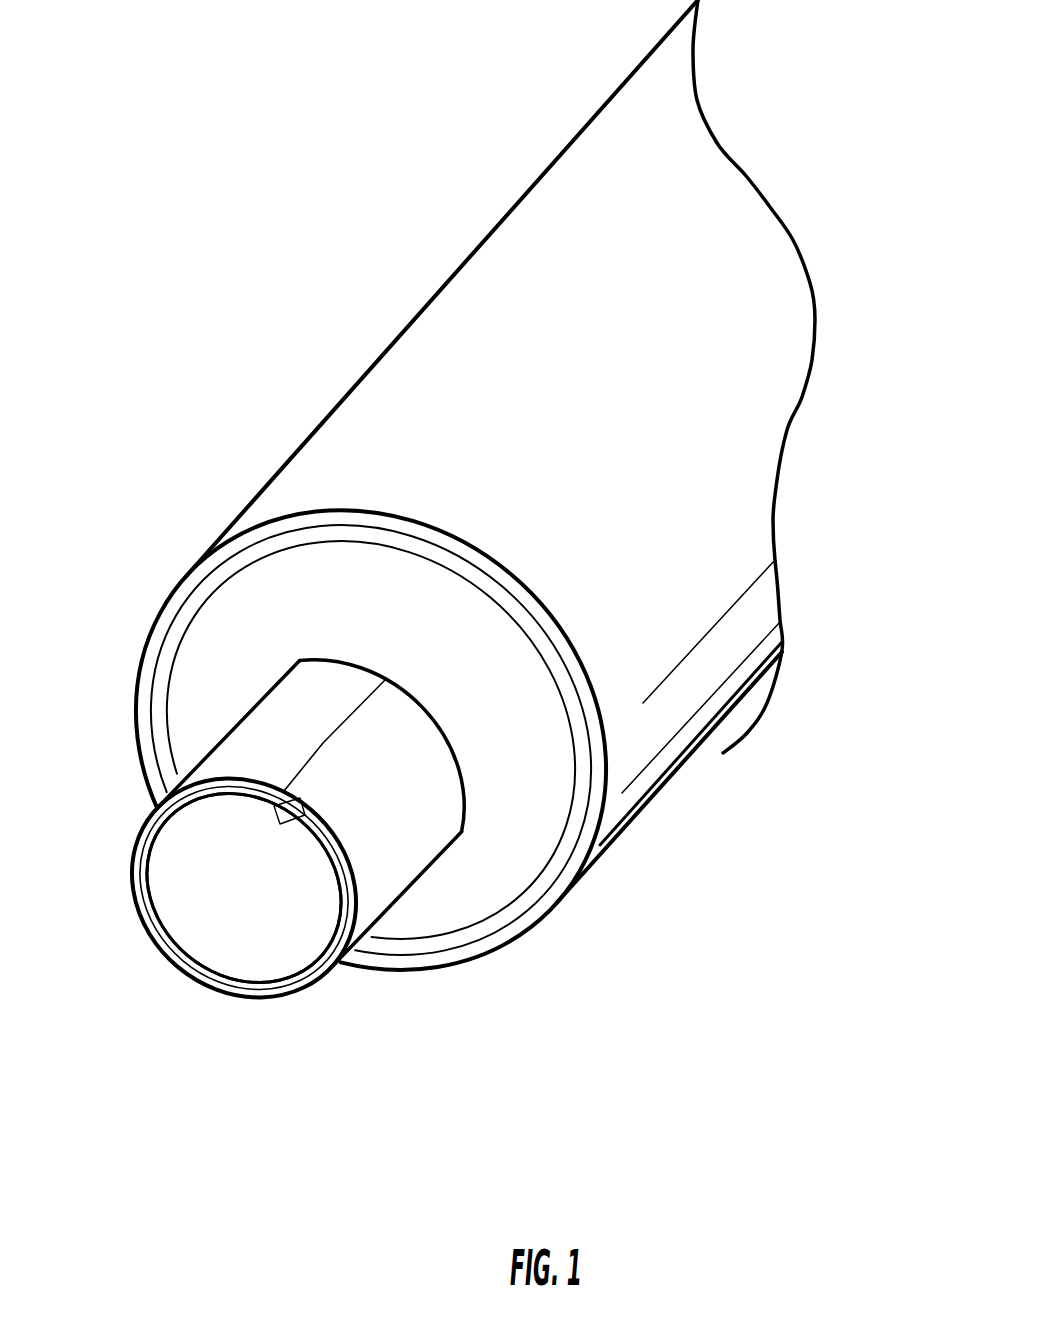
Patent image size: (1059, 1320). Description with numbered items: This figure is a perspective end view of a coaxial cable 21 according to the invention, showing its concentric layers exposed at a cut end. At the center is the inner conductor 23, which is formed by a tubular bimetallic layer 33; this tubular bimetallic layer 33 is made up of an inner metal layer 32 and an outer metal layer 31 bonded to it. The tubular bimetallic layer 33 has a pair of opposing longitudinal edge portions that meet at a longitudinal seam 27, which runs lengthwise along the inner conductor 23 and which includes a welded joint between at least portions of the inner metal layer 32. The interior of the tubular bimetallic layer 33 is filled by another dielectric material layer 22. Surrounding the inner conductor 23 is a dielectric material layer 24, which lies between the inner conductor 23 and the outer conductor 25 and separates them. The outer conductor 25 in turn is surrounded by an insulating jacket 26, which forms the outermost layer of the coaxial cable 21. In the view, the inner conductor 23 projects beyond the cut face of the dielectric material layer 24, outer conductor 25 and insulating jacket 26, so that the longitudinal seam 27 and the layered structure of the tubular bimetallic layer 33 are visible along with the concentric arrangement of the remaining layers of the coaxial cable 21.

The coaxial cable 21 is at (343, 382).
The another dielectric material layer 22 is at (227, 943).
The inner conductor 23 is at (403, 847).
The dielectric material layer 24 is at (518, 838).
The outer conductor 25 is at (572, 828).
The insulating jacket 26 is at (593, 793).
The longitudinal seam 27 is at (320, 743).
The outer metal layer 31 is at (140, 840).
The inner metal layer 32 is at (145, 877).
The tubular bimetallic layer 33 is at (293, 997).